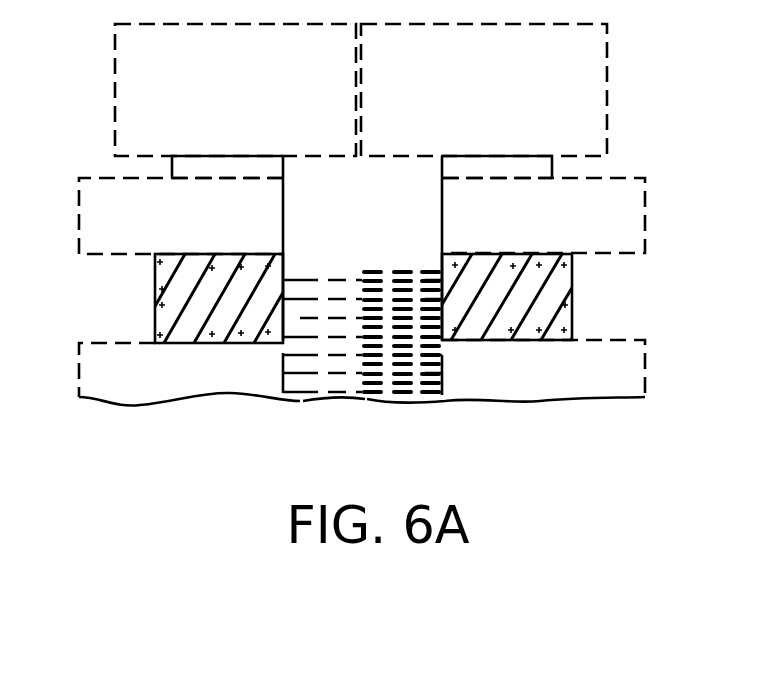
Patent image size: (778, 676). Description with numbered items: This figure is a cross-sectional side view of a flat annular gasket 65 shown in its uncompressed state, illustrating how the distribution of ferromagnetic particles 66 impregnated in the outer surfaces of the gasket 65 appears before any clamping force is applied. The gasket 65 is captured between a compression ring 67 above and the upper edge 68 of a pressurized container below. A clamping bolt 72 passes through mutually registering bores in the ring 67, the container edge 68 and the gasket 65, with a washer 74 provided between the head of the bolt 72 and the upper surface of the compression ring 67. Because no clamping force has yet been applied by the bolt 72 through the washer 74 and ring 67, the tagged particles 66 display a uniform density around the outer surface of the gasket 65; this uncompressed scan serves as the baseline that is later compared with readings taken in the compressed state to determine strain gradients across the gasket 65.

The clamping bolt 72 is at (361, 90).
The washer 74 is at (545, 167).
The compression ring 67 is at (181, 216).
The annular gasket 65 is at (198, 293).
The ferromagnetic particles 66 is at (572, 330).
The upper edge of pressurized container 68 is at (362, 373).